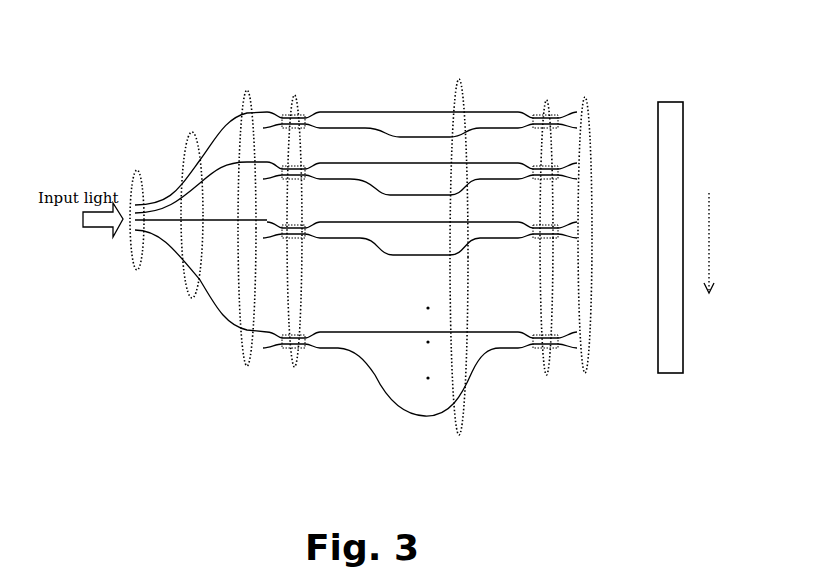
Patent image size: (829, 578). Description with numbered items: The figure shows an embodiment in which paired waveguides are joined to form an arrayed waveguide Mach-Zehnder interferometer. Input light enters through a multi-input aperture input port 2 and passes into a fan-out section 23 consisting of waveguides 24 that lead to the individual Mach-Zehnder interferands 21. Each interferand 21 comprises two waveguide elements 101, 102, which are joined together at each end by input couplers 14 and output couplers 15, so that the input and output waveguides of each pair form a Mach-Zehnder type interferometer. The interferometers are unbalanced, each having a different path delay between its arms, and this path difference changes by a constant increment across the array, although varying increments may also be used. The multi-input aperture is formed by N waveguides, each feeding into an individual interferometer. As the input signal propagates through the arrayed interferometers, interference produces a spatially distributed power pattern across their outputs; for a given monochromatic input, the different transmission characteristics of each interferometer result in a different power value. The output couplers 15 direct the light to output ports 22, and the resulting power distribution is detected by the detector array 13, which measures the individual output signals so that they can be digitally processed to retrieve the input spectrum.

The multi-input aperture input port 2 is at (133, 170).
The fan-out section 23 is at (213, 308).
The waveguides 24 is at (227, 123).
The input couplers 14 is at (298, 113).
The Mach-Zehnder interferands 21 is at (401, 263).
The first waveguide element 101 is at (387, 338).
The second waveguide element 102 is at (386, 400).
The output couplers 15 is at (547, 113).
The output ports 22 is at (592, 120).
The detector array 13 is at (672, 148).